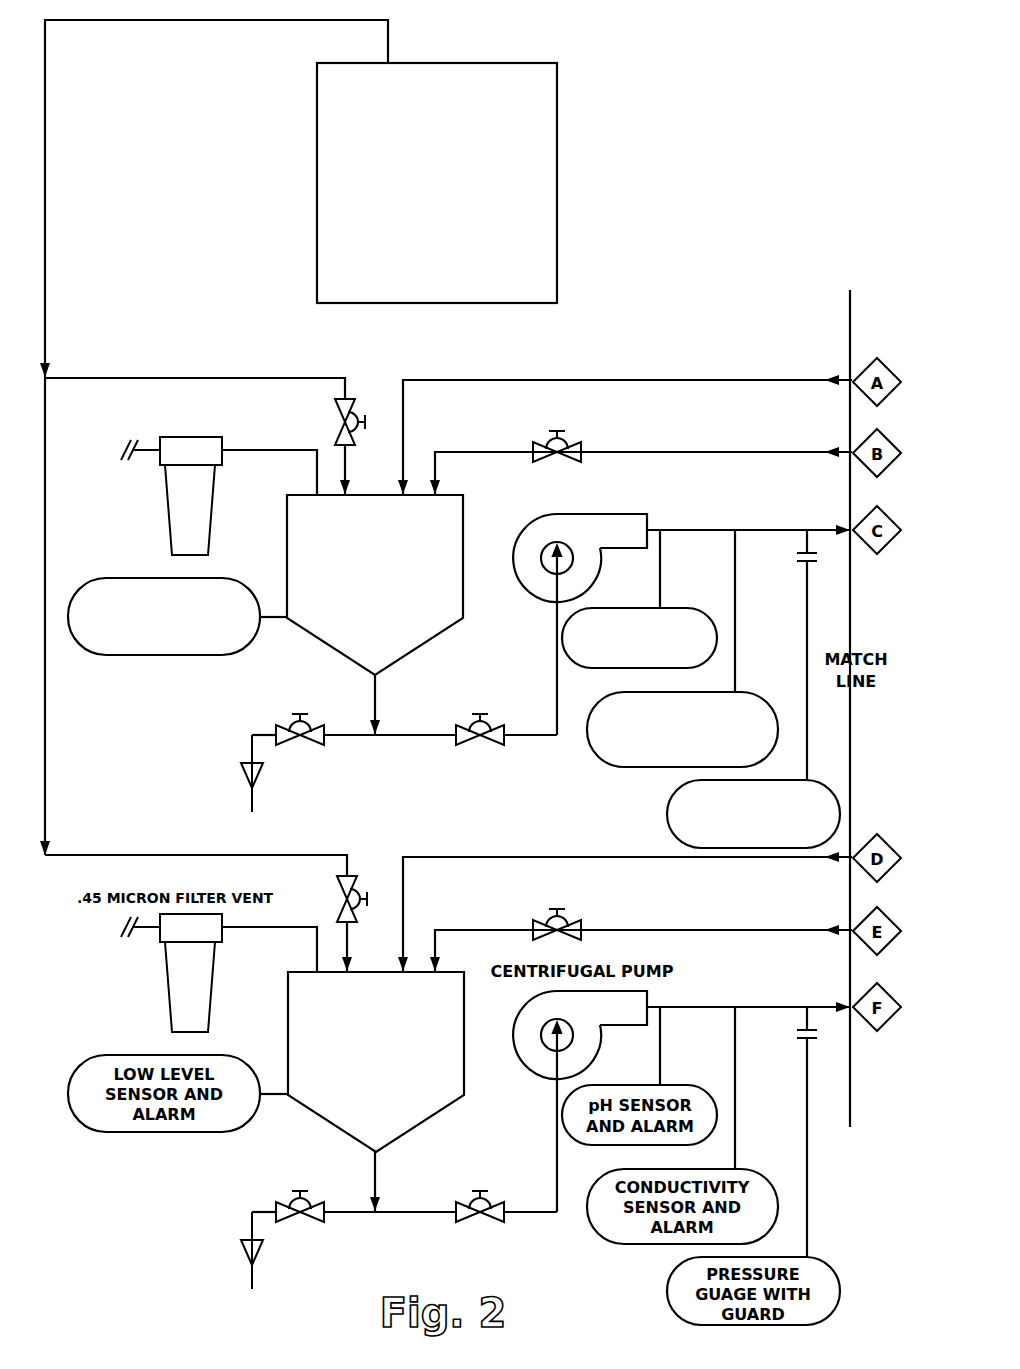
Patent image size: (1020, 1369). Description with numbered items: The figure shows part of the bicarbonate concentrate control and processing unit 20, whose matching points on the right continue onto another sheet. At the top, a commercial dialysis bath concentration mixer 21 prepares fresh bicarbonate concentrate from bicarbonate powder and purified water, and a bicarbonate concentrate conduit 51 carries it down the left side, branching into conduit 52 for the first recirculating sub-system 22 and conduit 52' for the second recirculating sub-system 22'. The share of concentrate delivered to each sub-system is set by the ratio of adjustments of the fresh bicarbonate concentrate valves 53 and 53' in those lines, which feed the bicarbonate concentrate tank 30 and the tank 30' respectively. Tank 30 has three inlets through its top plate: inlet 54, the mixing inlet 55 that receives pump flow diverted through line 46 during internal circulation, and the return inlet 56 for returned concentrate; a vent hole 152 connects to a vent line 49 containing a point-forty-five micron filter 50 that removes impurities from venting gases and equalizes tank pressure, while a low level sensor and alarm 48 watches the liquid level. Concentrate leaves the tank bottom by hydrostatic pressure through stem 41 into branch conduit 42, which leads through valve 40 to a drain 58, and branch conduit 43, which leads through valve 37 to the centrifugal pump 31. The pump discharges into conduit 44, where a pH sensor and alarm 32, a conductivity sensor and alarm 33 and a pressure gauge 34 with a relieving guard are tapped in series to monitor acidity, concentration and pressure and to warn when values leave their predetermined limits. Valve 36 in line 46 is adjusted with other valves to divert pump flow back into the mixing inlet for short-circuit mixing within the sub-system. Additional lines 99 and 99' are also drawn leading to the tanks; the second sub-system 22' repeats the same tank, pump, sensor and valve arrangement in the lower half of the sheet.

The bicarbonate concentrate control and processing unit 20 is at (592, 308).
The commercial dialysis bath concentration mixer 21 is at (316, 137).
The first recirculating sub-system 22 is at (198, 723).
The bicarbonate concentrate tank 30 is at (375, 585).
The centrifugal pump 31 is at (528, 598).
The pH sensor and alarm 32 is at (687, 607).
The conductivity sensor and alarm 33 is at (762, 693).
The pressure gauge 34 is at (822, 781).
The valve 36 is at (576, 445).
The valve 37 is at (490, 727).
The valve 40 is at (283, 727).
The stem 41 is at (377, 696).
The branch conduit 42 is at (345, 737).
The branch conduit 43 is at (412, 737).
The conduit 44 is at (778, 528).
The line 46 is at (718, 451).
The low level sensor and alarm 48 is at (175, 656).
The vent line 49 is at (281, 456).
The 0.45 micron filter 50 is at (200, 504).
The bicarbonate concentrate conduit 51 is at (45, 203).
The conduit 52 is at (195, 373).
The fresh bicarbonate concentrate valve 53 is at (360, 432).
The inlet 54 is at (349, 497).
The mixing inlet 55 is at (405, 497).
The return inlet 56 is at (437, 497).
The drain 58 is at (253, 795).
The recirculation line 99 is at (625, 423).
The vent hole 152 is at (313, 497).
The conduit 52' is at (196, 849).
The fresh bicarbonate concentrate valve 53' is at (361, 906).
The second recirculation line 99' is at (625, 900).
The bicarbonate concentrate tank 30' is at (376, 1062).
The second recirculating sub-system 22' is at (202, 1195).